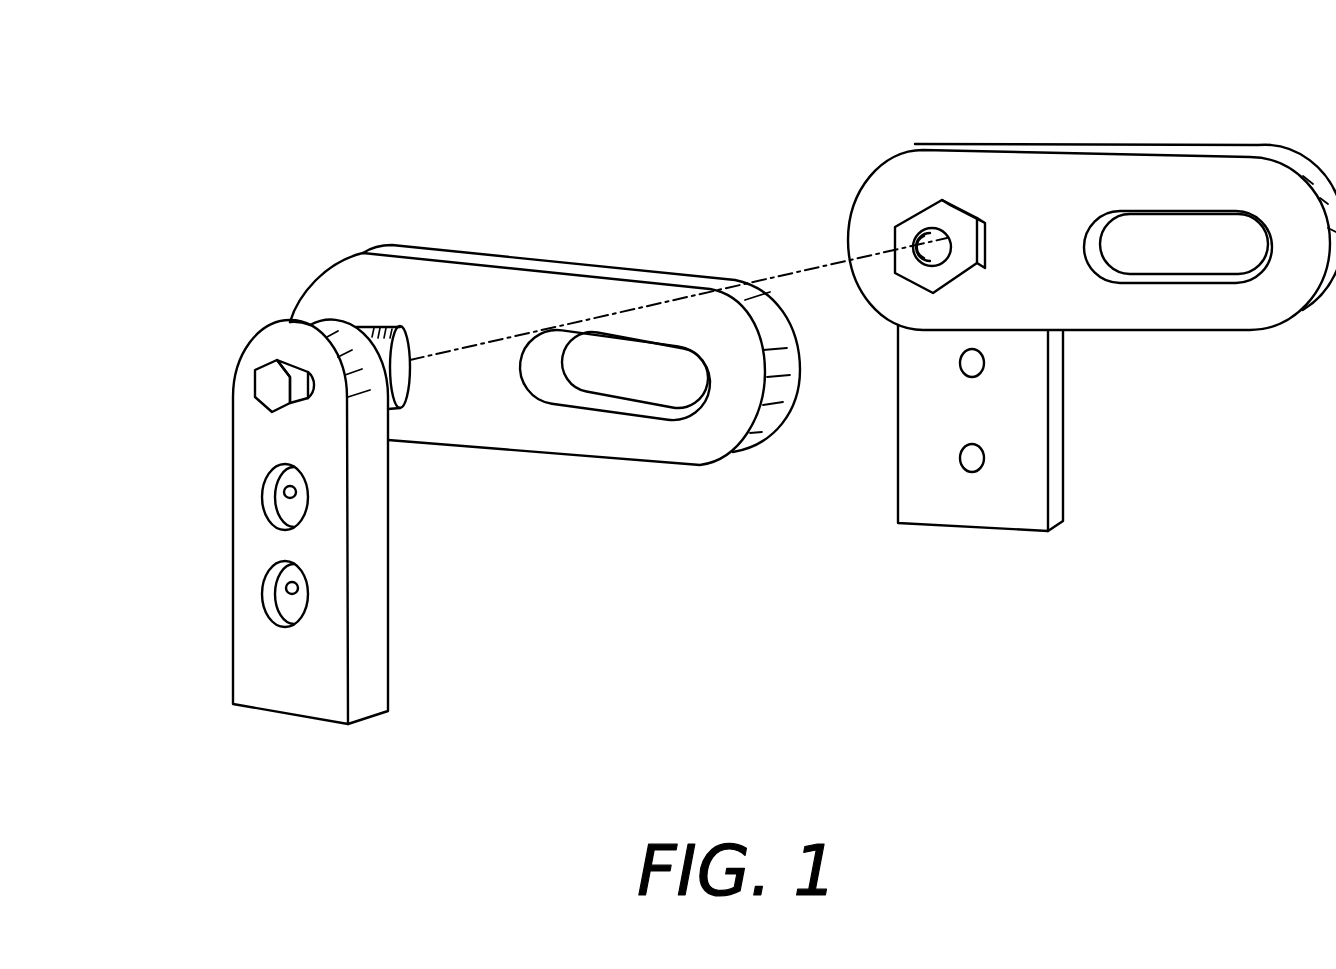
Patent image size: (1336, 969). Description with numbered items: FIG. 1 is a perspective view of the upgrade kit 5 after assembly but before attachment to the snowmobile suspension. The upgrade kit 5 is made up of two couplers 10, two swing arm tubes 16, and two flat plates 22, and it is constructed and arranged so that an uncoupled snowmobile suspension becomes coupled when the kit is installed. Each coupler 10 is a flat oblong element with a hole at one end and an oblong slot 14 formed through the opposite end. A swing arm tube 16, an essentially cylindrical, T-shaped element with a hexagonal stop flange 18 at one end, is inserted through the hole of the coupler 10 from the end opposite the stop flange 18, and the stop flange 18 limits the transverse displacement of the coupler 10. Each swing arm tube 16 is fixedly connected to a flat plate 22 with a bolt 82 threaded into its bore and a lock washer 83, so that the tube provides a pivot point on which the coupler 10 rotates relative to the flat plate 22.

The upgrade kit 5 is at (449, 108).
The coupler 10 is at (460, 282).
The slot 14 is at (577, 407).
The swing arm tube 16 is at (395, 386).
The stop flange 18 is at (938, 217).
The flat plate 22 is at (332, 698).
The bolt 82 is at (256, 398).
The lock washer 83 is at (292, 326).